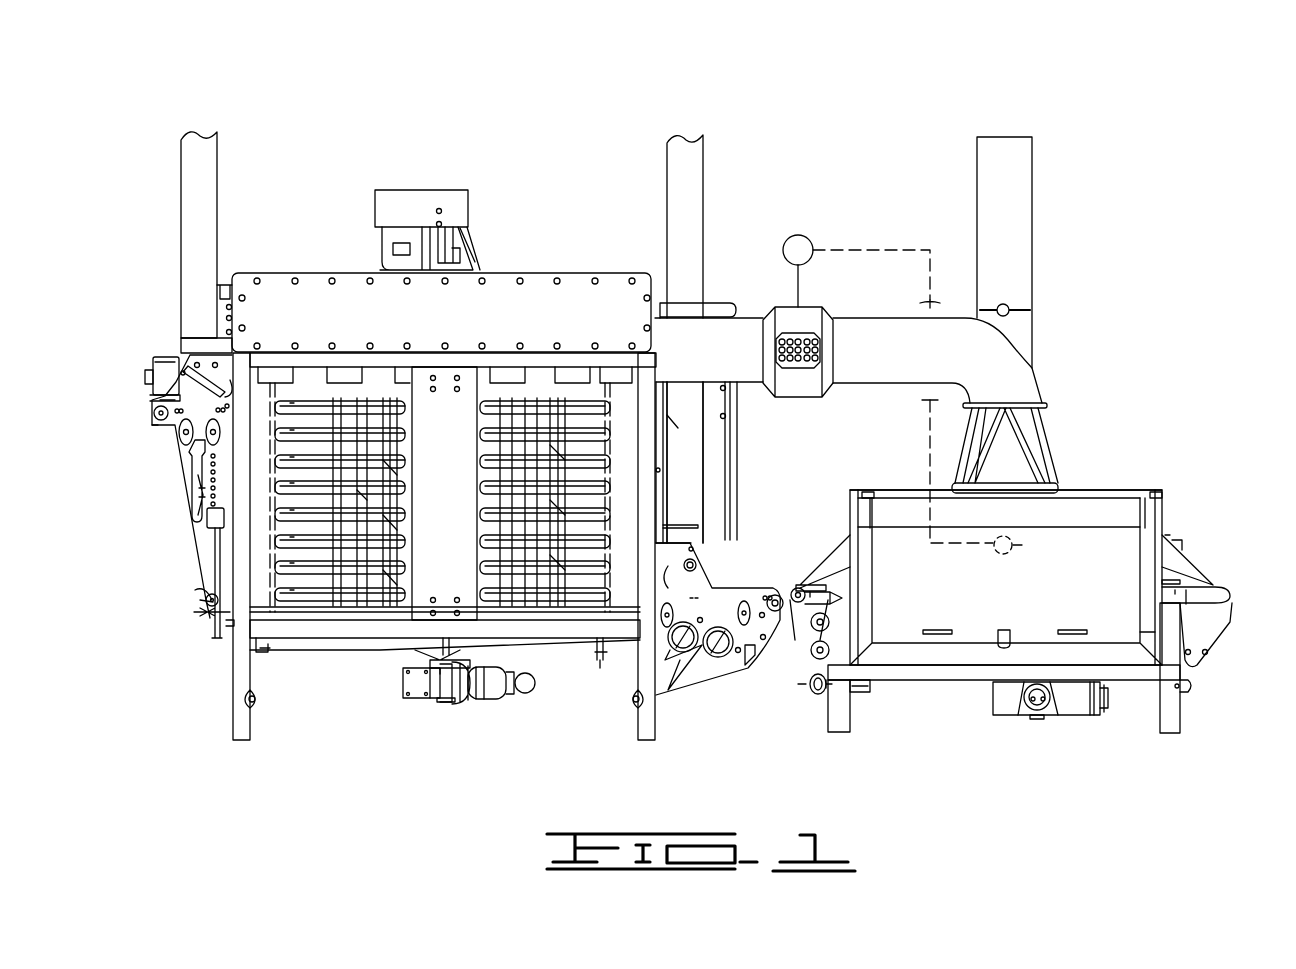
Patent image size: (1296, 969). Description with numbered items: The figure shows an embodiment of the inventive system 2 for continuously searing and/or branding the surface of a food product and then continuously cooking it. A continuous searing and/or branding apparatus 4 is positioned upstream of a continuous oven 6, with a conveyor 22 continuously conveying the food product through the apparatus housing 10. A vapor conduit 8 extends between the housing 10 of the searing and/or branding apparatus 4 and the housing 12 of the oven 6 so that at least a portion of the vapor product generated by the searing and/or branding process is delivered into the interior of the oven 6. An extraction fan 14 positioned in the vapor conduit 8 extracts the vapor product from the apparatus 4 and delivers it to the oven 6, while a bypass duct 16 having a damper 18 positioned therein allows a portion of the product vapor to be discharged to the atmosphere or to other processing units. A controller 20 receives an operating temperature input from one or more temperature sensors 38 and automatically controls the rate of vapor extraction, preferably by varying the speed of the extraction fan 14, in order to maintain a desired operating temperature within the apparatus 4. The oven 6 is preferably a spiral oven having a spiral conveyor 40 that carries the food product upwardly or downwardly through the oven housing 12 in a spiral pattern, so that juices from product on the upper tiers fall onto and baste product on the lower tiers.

The system for continuously searing and/or branding and cooking a food product 2 is at (842, 124).
The searing and/or branding apparatus 4 is at (1130, 490).
The continuous oven 6 is at (322, 284).
The vapor conduit 8 is at (884, 387).
The housing of the searing and/or branding apparatus 10 is at (903, 512).
The housing of the oven 12 is at (648, 373).
The extraction fan 14 is at (786, 387).
The bypass duct 16 is at (1032, 186).
The damper 18 is at (1030, 303).
The controller 20 is at (796, 234).
The conveyor 22 is at (1198, 585).
The temperature sensor 38 is at (1035, 541).
The spiral conveyor 40 is at (283, 542).